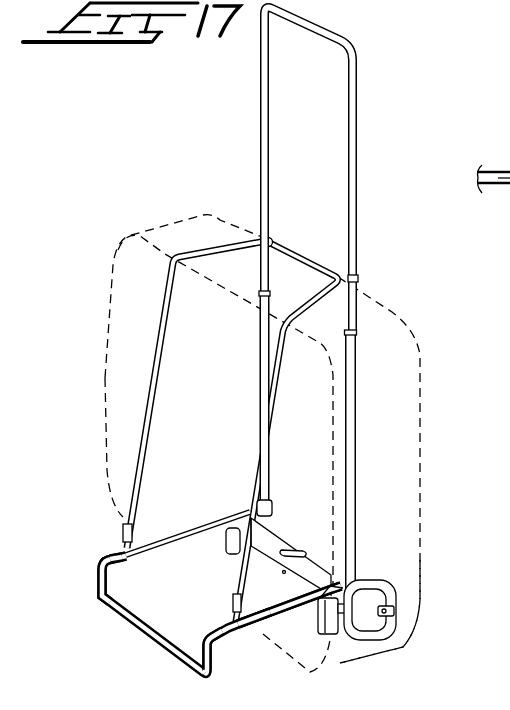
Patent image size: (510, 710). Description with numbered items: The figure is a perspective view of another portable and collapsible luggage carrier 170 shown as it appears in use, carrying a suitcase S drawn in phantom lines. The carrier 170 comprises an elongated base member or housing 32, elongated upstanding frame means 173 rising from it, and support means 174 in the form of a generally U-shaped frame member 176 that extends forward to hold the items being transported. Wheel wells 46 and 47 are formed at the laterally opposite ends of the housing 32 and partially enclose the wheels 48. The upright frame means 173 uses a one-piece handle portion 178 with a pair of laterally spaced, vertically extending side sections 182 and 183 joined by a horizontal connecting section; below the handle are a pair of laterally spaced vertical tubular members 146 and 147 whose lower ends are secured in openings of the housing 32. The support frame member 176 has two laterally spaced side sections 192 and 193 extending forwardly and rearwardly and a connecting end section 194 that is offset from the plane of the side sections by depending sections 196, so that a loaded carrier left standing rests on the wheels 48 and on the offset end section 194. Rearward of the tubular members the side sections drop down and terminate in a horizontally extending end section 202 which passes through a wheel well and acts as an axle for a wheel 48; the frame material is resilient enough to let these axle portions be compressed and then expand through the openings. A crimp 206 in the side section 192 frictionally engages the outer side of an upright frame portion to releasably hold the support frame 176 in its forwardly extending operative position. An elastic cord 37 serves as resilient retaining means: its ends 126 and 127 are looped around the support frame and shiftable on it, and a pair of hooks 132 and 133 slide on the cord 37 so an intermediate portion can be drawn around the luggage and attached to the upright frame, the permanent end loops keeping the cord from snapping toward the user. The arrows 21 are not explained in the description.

The suitcase S is at (180, 216).
The pivot direction arrows 21 is at (246, 255).
The base member or housing 32 is at (300, 528).
The elastic cord 37 is at (153, 400).
The wheel well 46 is at (270, 503).
The wheel well 47 is at (373, 590).
The wheel 48 is at (392, 608).
The end of cord 126 is at (233, 614).
The end of cord 127 is at (130, 562).
The hook 132 is at (357, 278).
The hook 133 is at (273, 239).
The tubular member 146 is at (356, 412).
The tubular member 147 is at (259, 407).
The luggage carrier 170 is at (324, 167).
The upright frame means 173 is at (362, 228).
The support means 174 is at (261, 641).
The U-shaped support frame member 176 is at (110, 556).
The handle portion 178 is at (357, 33).
The side section 182 is at (358, 118).
The side section 183 is at (260, 115).
The side section 192 is at (289, 611).
The side section 193 is at (205, 528).
The end section 194 is at (142, 636).
The depending section 196 is at (104, 586).
The end section 202 is at (395, 643).
The crimp 206 is at (333, 596).